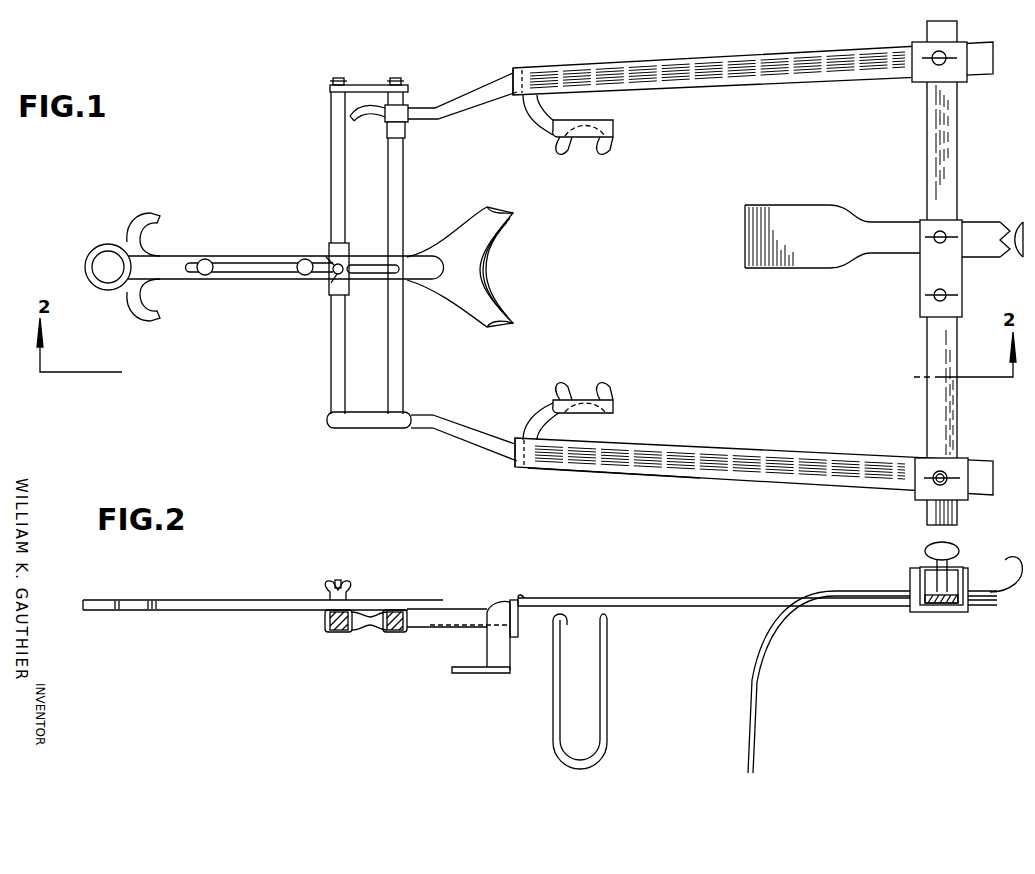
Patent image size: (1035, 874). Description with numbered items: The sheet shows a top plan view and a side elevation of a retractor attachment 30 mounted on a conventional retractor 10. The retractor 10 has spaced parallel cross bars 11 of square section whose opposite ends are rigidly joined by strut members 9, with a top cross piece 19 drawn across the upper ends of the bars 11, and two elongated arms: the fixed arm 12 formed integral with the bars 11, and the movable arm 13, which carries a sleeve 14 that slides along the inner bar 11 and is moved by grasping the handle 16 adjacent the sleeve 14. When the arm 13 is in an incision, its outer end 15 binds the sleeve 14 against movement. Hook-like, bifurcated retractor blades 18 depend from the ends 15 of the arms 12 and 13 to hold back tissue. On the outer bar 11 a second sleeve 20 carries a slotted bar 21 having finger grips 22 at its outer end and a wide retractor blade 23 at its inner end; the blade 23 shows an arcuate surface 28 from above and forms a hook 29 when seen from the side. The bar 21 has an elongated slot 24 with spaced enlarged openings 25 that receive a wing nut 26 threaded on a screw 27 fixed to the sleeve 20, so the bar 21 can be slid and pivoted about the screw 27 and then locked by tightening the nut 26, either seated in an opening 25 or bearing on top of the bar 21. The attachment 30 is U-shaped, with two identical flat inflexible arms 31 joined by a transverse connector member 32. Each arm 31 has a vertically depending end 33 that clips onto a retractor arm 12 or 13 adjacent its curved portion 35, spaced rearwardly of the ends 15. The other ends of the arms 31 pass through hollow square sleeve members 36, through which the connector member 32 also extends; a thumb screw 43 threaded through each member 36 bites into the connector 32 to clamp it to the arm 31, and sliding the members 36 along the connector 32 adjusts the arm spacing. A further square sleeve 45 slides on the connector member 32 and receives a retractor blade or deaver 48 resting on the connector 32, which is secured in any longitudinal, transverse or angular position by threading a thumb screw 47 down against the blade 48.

In FIG. 1, the strut members 9 is at (360, 428).
In FIG. 1, the retractor 10 is at (424, 430).
In FIG. 1, the cross bars 11 is at (340, 323).
In FIG. 2, the cross bars 11 is at (330, 626).
In FIG. 1, the arm 12 is at (478, 448).
In FIG. 1, the arm 13 is at (440, 118).
In FIG. 1, the sleeve 14 is at (406, 128).
In FIG. 2, the sleeve 14 is at (395, 634).
In FIG. 1, the outer end 15 is at (614, 128).
In FIG. 1, the handle 16 is at (354, 121).
In FIG. 1, the retractor blades 18 is at (608, 150).
In FIG. 2, the retractor blades 18 is at (608, 690).
In FIG. 1, the top cross bar 19 is at (360, 86).
In FIG. 1, the sleeve 20 is at (335, 290).
In FIG. 2, the sleeve 20 is at (340, 632).
In FIG. 1, the slotted bar 21 is at (238, 282).
In FIG. 2, the slotted bar 21 is at (244, 612).
In FIG. 1, the finger grips 22 is at (130, 308).
In FIG. 1, the retractor blade 23 is at (488, 210).
In FIG. 1, the slot 24 is at (268, 238).
In FIG. 1, the enlarged openings 25 is at (208, 258).
In FIG. 2, the wing nut 26 is at (326, 592).
In FIG. 2, the screw 27 is at (340, 580).
In FIG. 1, the arcuate surface 28 is at (490, 258).
In FIG. 2, the hook 29 is at (490, 673).
In FIG. 1, the retractor attachment 30 is at (718, 480).
In FIG. 1, the arms 31 is at (737, 78).
In FIG. 2, the arms 31 is at (680, 608).
In FIG. 1, the connector member 32 is at (932, 136).
In FIG. 2, the connector member 32 is at (945, 600).
In FIG. 2, the vertically depending end 33 is at (517, 637).
In FIG. 1, the curved portion 35 is at (513, 92).
In FIG. 1, the members 36 is at (955, 75).
In FIG. 2, the members 36 is at (916, 606).
In FIG. 1, the thumb screw 43 is at (957, 482).
In FIG. 1, the sleeve 45 is at (955, 262).
In FIG. 2, the sleeve 45 is at (918, 572).
In FIG. 1, the thumb screw 47 is at (930, 235).
In FIG. 2, the thumb screw 47 is at (926, 550).
In FIG. 1, the retractor blade 48 is at (803, 268).
In FIG. 2, the retractor blade 48 is at (782, 638).